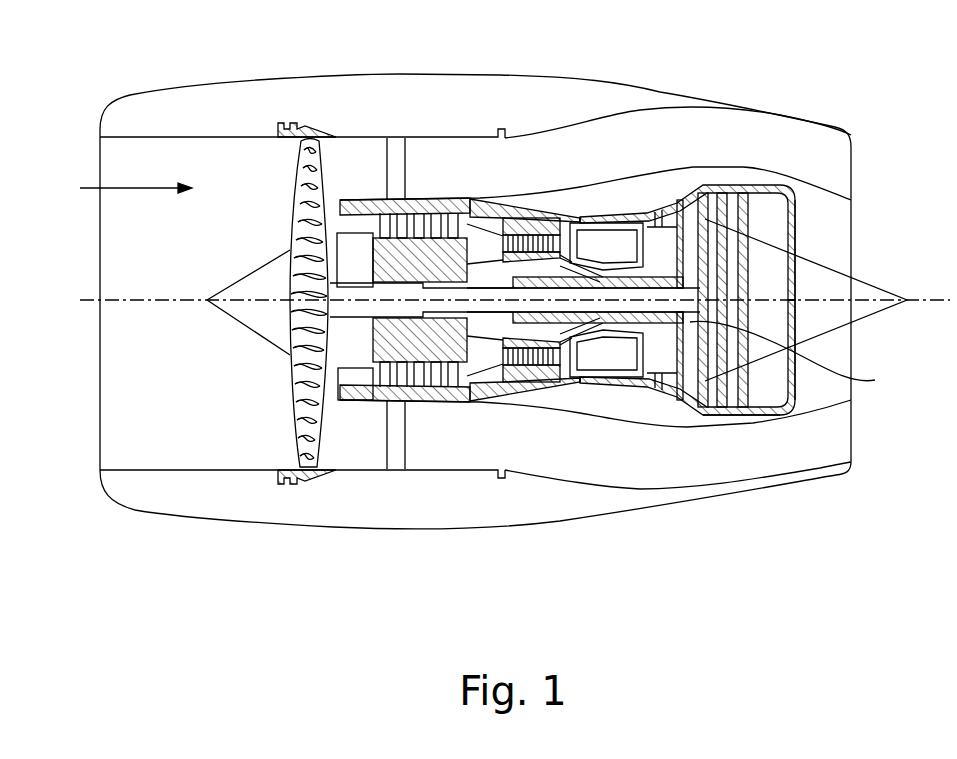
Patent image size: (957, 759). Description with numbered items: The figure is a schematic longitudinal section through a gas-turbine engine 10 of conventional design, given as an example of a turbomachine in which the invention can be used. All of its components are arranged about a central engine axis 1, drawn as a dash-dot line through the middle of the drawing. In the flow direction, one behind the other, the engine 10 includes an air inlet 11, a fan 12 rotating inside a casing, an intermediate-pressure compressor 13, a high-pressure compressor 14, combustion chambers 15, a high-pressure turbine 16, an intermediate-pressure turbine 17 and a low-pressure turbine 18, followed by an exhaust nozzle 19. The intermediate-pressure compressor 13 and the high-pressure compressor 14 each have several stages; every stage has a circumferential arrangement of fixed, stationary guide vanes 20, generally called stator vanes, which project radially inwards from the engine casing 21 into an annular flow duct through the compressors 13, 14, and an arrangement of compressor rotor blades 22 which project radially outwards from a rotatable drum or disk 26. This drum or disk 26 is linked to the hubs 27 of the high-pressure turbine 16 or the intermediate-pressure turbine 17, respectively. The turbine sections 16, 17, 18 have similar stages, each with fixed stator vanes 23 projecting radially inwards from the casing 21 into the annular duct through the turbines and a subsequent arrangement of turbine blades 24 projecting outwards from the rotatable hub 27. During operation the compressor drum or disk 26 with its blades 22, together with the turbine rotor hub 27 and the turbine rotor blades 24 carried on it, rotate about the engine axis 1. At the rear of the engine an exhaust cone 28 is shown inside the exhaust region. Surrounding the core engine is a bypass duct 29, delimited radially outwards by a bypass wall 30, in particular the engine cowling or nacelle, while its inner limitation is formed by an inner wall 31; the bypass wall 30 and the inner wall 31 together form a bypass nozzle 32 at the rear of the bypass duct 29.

The central engine axis 1 is at (130, 307).
The gas-turbine engine 10 is at (641, 133).
The air inlet 11 is at (229, 165).
The fan 12 is at (310, 152).
The intermediate-pressure compressor 13 is at (390, 137).
The high-pressure compressor 14 is at (547, 200).
The combustion chambers 15 is at (627, 210).
The high-pressure turbine 16 is at (643, 205).
The intermediate-pressure turbine 17 is at (682, 195).
The low-pressure turbine 18 is at (752, 195).
The exhaust nozzle 19 is at (780, 233).
The guide vanes 20 is at (385, 410).
The engine casing 21 is at (413, 413).
The compressor rotor blades 22 is at (430, 410).
The stator vanes 23 is at (750, 380).
The turbine blades 24 is at (673, 380).
The compressor drum or disk 26 is at (490, 405).
The turbine rotor hub 27 is at (827, 367).
The exhaust cone 28 is at (865, 300).
The bypass duct 29 is at (462, 160).
The bypass wall 30 is at (830, 133).
The inner wall 31 is at (633, 430).
The bypass nozzle 32 is at (823, 170).